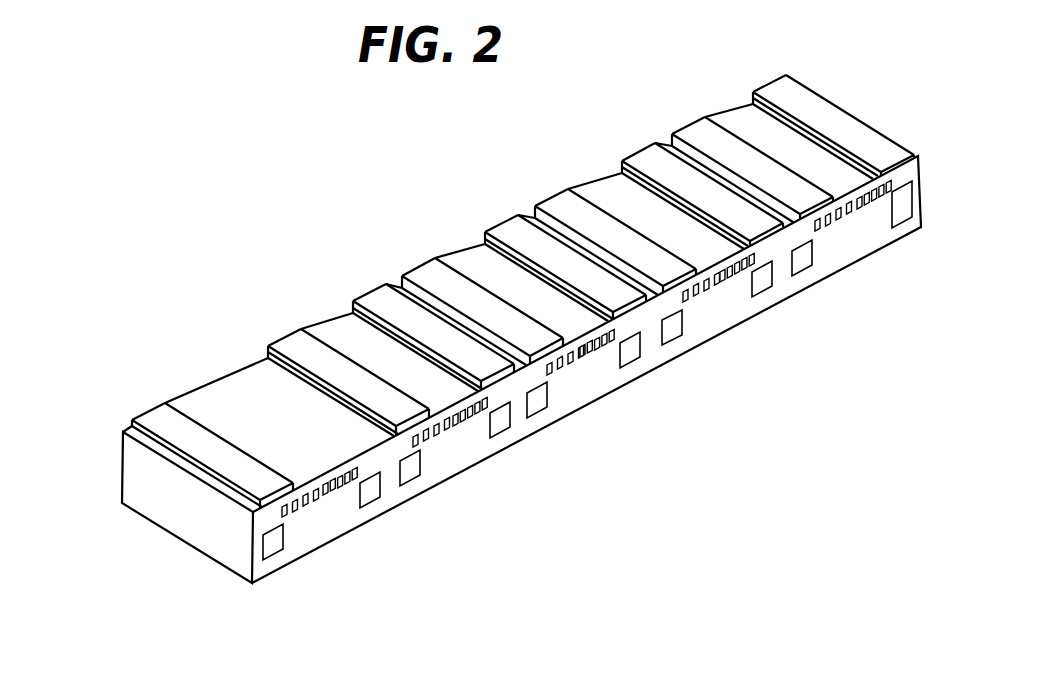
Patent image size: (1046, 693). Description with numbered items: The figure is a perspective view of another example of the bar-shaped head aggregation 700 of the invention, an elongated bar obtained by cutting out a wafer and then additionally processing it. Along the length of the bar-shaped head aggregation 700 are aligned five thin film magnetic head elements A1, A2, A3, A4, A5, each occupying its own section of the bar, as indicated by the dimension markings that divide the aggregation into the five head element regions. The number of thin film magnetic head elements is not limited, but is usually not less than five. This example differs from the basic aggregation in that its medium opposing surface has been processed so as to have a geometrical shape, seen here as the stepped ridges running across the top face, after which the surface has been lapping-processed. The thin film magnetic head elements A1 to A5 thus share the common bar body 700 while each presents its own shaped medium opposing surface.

The optical component body 700 is at (169, 510).
The thin film magnetic head element A1 is at (252, 356).
The thin film magnetic head element A2 is at (400, 276).
The thin film magnetic head element A3 is at (525, 209).
The thin film magnetic head element A4 is at (659, 137).
The thin film magnetic head element A5 is at (790, 66).